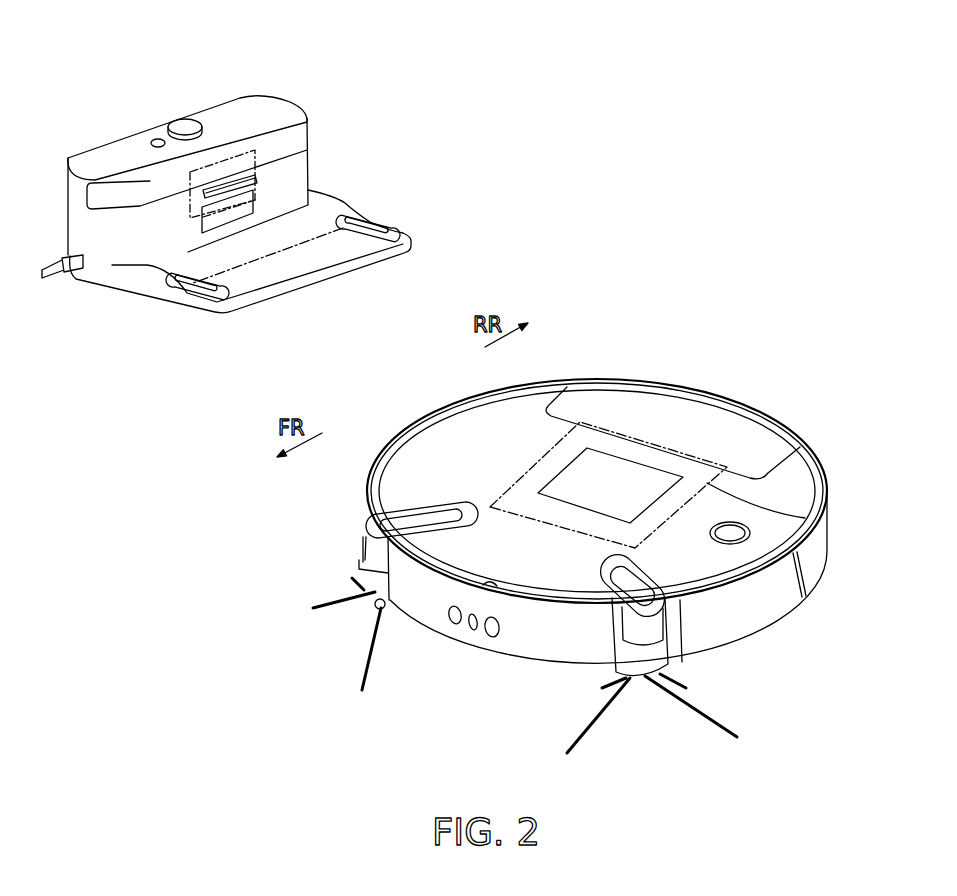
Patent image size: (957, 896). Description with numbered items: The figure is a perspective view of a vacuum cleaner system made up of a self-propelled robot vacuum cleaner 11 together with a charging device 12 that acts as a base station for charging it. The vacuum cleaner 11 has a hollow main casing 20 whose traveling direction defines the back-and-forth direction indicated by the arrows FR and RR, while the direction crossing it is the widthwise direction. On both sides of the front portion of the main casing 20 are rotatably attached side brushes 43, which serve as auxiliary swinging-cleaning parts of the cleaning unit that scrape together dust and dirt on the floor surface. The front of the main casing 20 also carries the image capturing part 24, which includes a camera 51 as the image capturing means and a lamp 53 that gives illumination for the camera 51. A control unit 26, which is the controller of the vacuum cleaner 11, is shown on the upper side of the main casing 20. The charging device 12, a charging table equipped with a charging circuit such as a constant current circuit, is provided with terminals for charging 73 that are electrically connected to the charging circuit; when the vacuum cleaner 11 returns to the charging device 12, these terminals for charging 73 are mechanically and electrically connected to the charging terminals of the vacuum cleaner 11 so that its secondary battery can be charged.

The vacuum cleaner 11 is at (665, 344).
The charging device 12 is at (330, 68).
The main casing 20 is at (790, 480).
The image capturing part 24 is at (500, 609).
The control unit 26 is at (815, 520).
The side brushes 43 is at (342, 632).
The camera 51 is at (453, 626).
The lamp 53 is at (472, 631).
The terminals for charging 73 is at (372, 226).